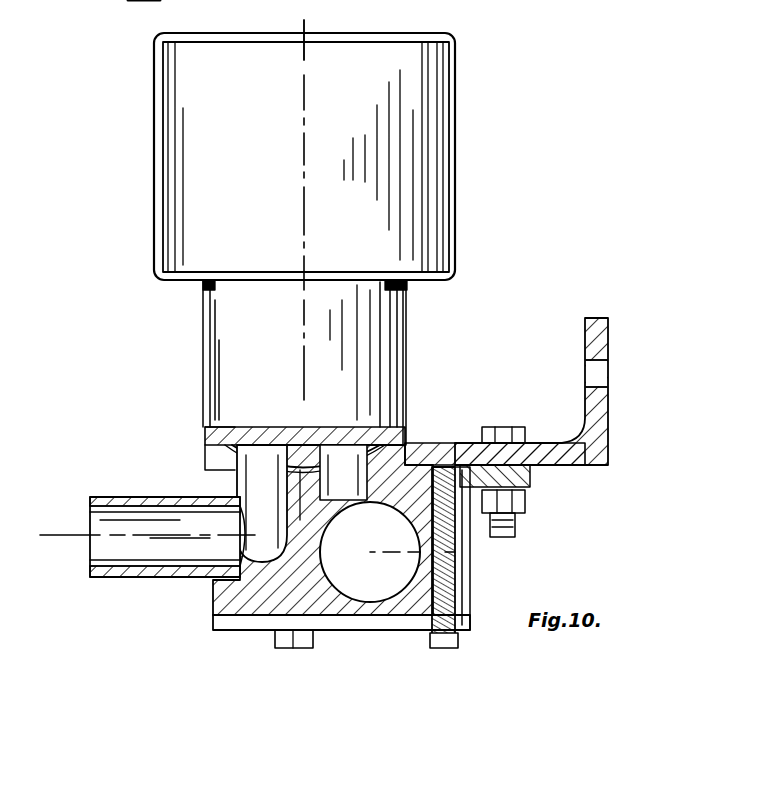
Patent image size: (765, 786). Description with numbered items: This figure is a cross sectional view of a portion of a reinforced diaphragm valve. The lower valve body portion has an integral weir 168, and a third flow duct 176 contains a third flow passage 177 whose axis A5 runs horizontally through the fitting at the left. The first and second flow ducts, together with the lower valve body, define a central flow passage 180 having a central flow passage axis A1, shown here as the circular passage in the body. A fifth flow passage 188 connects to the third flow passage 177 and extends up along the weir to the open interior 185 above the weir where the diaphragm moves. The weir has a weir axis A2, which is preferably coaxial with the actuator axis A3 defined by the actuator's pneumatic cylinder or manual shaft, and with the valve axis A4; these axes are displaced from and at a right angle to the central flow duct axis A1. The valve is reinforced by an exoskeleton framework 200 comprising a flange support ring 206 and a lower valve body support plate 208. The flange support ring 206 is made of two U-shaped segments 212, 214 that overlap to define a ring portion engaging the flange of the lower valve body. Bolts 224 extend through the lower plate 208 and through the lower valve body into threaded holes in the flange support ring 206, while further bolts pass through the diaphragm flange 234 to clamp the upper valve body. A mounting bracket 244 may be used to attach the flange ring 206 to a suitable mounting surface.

The central flow passage axis A1 is at (440, 550).
The weir axis A2 is at (242, 638).
The actuator axis A3 is at (307, 200).
The valve axis A4 is at (302, 26).
The third flow passage axis A5 is at (55, 525).
The weir 168 is at (188, 470).
The third flow duct 176 is at (125, 577).
The third flow passage 177 is at (100, 545).
The central flow passage 180 is at (402, 598).
The open interior 185 is at (405, 345).
The fifth flow passage 188 is at (170, 497).
The exoskeleton framework 200 is at (214, 618).
The flange support ring 206 is at (420, 465).
The lower valve body support plate 208 is at (375, 628).
The U-shaped segment 212 is at (185, 420).
The U-shaped segment 214 is at (530, 473).
The bolt 224 is at (290, 650).
The diaphragm flange 234 is at (218, 428).
The mounting bracket 244 is at (585, 332).